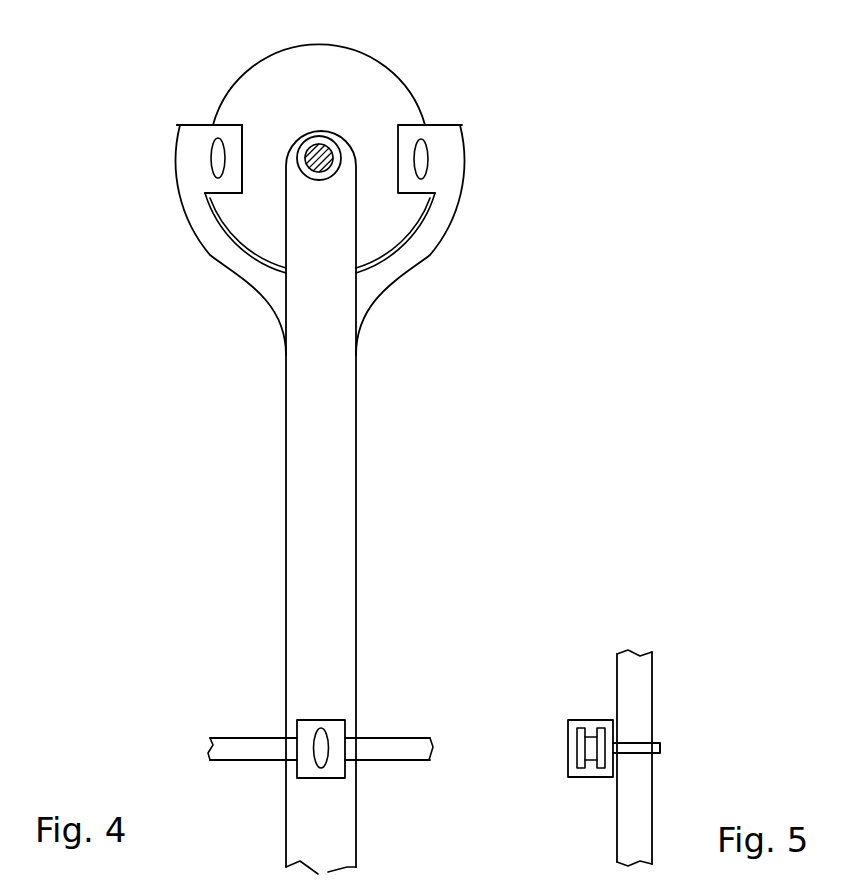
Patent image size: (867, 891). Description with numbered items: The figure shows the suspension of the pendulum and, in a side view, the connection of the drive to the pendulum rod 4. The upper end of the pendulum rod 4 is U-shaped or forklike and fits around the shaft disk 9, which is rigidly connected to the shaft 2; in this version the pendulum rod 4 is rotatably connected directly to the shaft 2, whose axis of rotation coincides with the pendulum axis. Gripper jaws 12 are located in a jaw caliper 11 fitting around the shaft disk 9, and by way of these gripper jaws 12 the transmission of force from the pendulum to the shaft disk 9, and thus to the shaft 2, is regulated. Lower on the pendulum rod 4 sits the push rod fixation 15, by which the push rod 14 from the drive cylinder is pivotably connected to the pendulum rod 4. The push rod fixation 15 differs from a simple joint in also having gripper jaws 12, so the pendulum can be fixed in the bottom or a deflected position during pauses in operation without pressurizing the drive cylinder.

In FIG. 4, the shaft 2 is at (328, 147).
In FIG. 4, the pendulum rod 4 is at (327, 543).
In FIG. 5, the pendulum rod 4 is at (635, 698).
In FIG. 4, the shaft disk 9 is at (272, 87).
In FIG. 4, the jaw caliper 11 is at (203, 163).
In FIG. 4, the gripper jaws 12 is at (422, 158).
In FIG. 5, the gripper jaws 12 is at (580, 743).
In FIG. 4, the push rod 14 is at (380, 748).
In FIG. 5, the push rod 14 is at (590, 753).
In FIG. 4, the push rod fixation 15 is at (300, 738).
In FIG. 5, the push rod fixation 15 is at (590, 723).